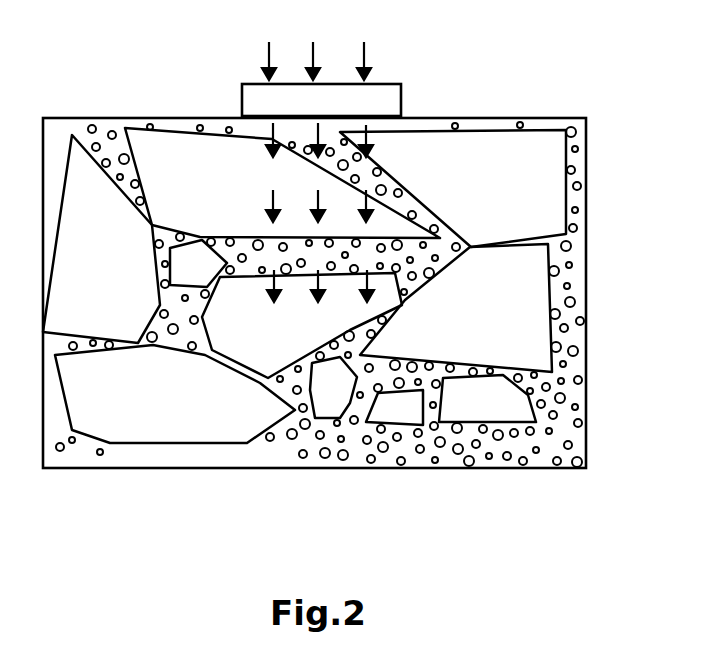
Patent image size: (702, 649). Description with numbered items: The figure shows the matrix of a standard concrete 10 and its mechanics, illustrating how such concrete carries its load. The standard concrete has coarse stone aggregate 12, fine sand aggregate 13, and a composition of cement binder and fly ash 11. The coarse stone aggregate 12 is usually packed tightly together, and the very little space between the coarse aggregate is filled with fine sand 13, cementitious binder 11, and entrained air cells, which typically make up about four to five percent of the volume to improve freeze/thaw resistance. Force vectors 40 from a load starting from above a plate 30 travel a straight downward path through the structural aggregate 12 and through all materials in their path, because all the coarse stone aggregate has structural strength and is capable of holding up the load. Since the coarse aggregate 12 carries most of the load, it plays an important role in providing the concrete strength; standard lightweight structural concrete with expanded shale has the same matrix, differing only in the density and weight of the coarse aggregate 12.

The composite material body 10 is at (351, 477).
The composition of cement binder and fly ash 11 is at (270, 457).
The coarse stone aggregate 12 is at (167, 417).
The fine sand aggregate 13 is at (446, 443).
The plate 30 is at (389, 100).
The force vectors 40 is at (369, 52).